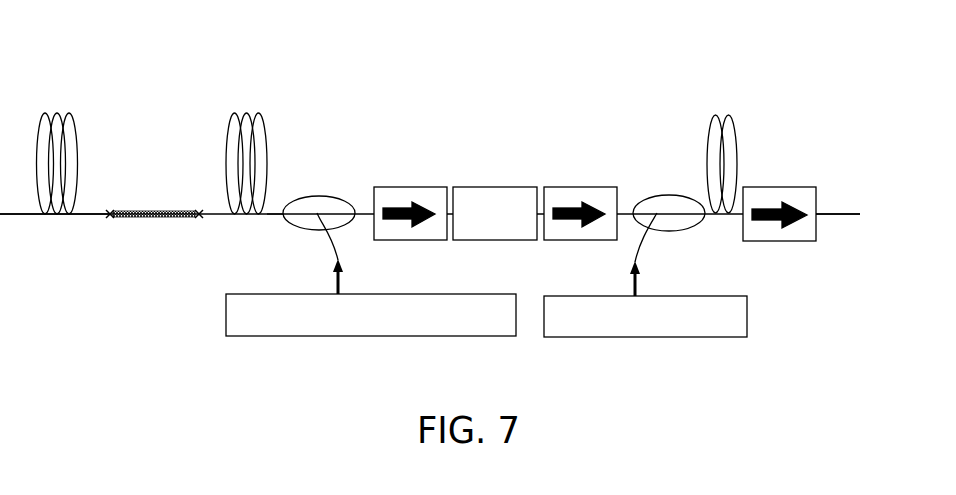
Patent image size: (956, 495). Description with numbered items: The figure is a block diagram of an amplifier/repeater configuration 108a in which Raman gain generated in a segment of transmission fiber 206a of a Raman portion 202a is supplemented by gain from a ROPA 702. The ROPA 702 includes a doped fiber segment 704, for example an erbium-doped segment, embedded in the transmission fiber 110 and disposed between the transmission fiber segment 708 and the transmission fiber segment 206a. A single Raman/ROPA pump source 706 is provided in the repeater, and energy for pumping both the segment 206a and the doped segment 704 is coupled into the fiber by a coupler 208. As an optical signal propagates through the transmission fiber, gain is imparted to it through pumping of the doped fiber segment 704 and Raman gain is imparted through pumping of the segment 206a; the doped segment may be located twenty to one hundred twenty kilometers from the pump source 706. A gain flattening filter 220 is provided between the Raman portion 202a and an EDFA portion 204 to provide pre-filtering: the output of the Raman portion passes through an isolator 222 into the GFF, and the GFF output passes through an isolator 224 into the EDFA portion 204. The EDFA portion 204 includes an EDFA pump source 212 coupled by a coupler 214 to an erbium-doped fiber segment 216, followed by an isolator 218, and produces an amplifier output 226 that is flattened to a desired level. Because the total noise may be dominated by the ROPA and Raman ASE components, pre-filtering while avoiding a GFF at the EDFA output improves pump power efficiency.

The amplifier/repeater configuration 108a is at (466, 76).
The transmission fiber 110 is at (82, 216).
The Raman portion 202a is at (255, 254).
The EDFA portion 204 is at (752, 276).
The transmission fiber segment 206a is at (246, 113).
The coupler 208 is at (329, 196).
The EDFA pump source 212 is at (632, 337).
The coupler 214 is at (655, 195).
The erbium-doped fiber segment 216 is at (707, 143).
The isolator 218 is at (797, 187).
The gain flattening filter 220 is at (490, 187).
The isolator 222 is at (400, 240).
The isolator 224 is at (585, 240).
The amplifier output 226 is at (826, 213).
The ROPA 702 is at (150, 182).
The doped fiber segment 704 is at (157, 216).
The Raman/ROPA pump source 706 is at (318, 336).
The transmission fiber segment 708 is at (58, 113).